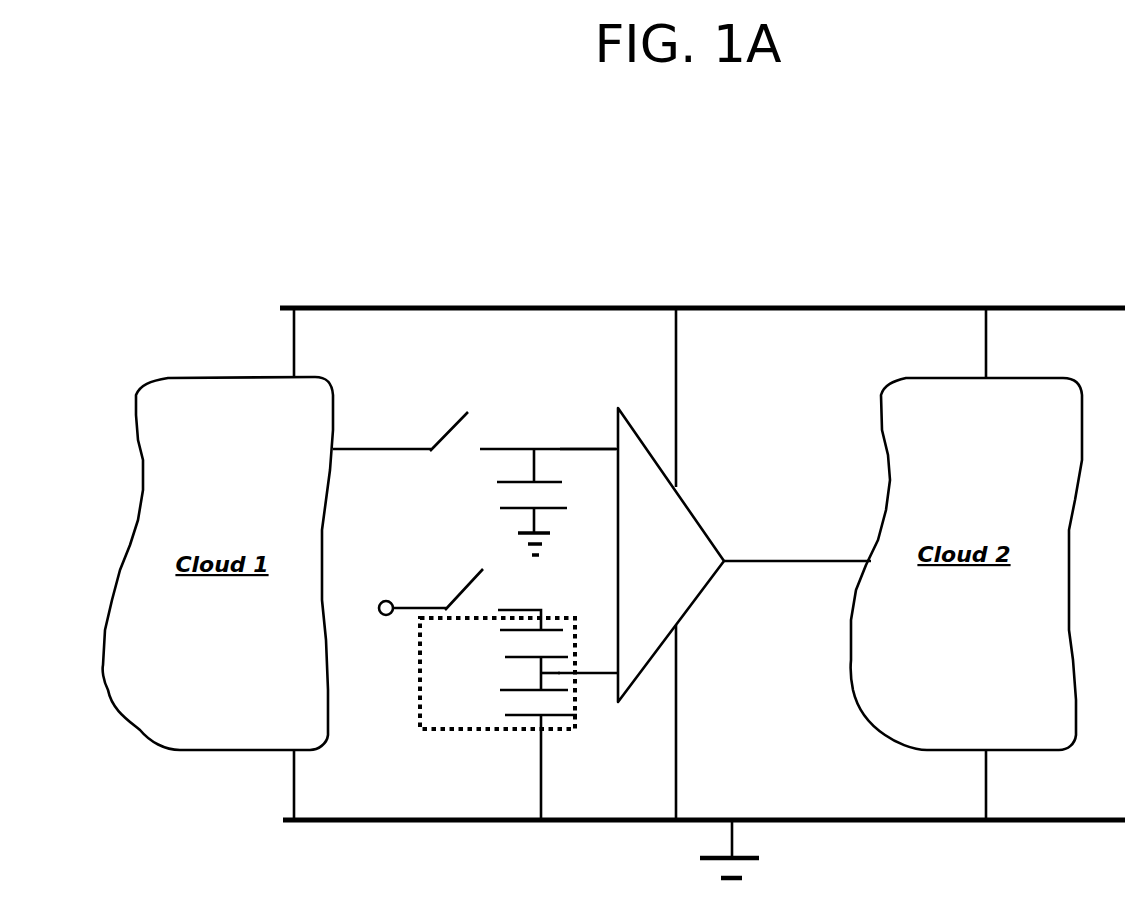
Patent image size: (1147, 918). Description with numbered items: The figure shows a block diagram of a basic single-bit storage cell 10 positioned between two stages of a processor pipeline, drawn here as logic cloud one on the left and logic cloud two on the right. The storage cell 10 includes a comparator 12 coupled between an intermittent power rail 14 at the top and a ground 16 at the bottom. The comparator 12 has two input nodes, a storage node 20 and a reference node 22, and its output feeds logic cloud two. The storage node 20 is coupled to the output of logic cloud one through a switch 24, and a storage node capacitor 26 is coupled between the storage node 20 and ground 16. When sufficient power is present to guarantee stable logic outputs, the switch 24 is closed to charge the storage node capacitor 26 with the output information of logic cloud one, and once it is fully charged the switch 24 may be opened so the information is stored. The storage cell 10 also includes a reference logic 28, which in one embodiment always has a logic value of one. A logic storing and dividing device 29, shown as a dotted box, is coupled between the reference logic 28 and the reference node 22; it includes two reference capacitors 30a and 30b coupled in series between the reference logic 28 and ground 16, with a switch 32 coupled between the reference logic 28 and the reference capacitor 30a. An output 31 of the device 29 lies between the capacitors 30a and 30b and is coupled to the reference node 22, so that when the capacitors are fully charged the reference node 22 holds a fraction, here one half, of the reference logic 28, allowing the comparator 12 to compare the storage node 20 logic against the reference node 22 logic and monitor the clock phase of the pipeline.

The storage cell 10 is at (735, 287).
The comparator 12 is at (744, 555).
The intermittent power rail 14 is at (497, 307).
The ground 16 is at (478, 821).
The storage node 20 is at (565, 448).
The reference node 22 is at (597, 672).
The switch 24 is at (438, 434).
The storage node capacitor 26 is at (510, 502).
The reference logic 28 is at (376, 604).
The logic storing and dividing device 29 is at (461, 673).
The reference capacitor 30a is at (506, 651).
The reference capacitor 30b is at (511, 695).
The output 31 is at (545, 674).
The switch 32 is at (450, 594).